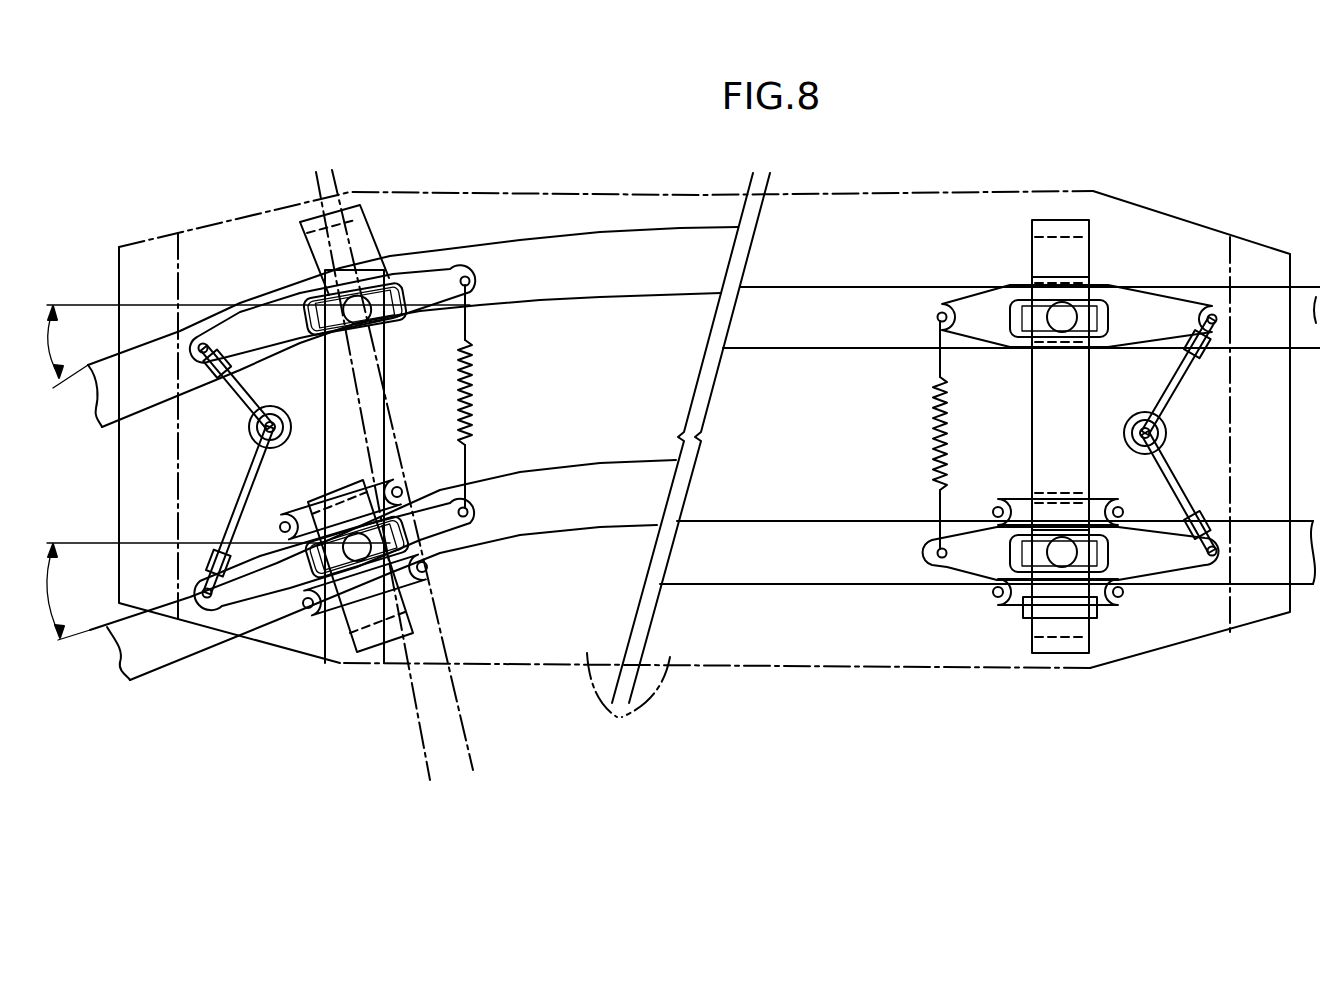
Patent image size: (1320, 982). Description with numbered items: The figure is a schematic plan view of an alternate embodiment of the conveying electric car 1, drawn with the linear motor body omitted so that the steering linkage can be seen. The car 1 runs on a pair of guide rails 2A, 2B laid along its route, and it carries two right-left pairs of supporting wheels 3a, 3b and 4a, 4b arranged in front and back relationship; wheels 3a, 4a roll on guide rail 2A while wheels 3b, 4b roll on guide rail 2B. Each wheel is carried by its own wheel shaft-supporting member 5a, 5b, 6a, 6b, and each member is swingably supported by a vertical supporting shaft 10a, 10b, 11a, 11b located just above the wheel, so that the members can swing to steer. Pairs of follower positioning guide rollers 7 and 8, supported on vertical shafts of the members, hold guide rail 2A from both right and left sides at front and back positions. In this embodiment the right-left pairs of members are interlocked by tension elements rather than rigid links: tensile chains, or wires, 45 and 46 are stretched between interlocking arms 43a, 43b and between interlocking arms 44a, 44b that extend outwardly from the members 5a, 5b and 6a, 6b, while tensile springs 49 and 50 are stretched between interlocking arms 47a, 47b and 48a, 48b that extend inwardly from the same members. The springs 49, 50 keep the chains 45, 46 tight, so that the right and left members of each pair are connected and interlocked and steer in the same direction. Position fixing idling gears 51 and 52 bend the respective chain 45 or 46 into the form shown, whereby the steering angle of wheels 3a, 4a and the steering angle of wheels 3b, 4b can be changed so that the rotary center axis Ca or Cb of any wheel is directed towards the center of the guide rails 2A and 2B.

The conveying electric car 1 is at (620, 724).
The guide rail 2A is at (698, 545).
The guide rail 2B is at (763, 307).
The supporting wheel 3a is at (1078, 610).
The supporting wheel 3b is at (1020, 310).
The supporting wheel 4a is at (437, 557).
The supporting wheel 4b is at (291, 302).
The wheel shaft-supporting member 5a is at (1033, 647).
The wheel shaft-supporting member 5b is at (1080, 230).
The wheel shaft-supporting member 6a is at (357, 650).
The wheel shaft-supporting member 6b is at (397, 277).
The follower positioning guide rollers 7 is at (977, 503).
The follower positioning guide rollers 8 is at (397, 480).
The vertical supporting shaft 10a is at (1060, 547).
The vertical supporting shaft 10b is at (1053, 323).
The vertical supporting shaft 11a is at (420, 597).
The vertical supporting shaft 11b is at (367, 330).
The interlocking arm 43a is at (1177, 563).
The interlocking arm 43b is at (1147, 303).
The interlocking arm 44a is at (263, 590).
The interlocking arm 44b is at (243, 330).
The tensile chain 45 is at (1163, 390).
The tensile chain 46 is at (250, 500).
The interlocking arm 47a is at (947, 560).
The interlocking arm 47b is at (967, 307).
The interlocking arm 48a is at (453, 527).
The interlocking arm 48b is at (430, 275).
The tensile spring 49 is at (920, 433).
The tensile spring 50 is at (473, 390).
The position fixing idling gear 51 is at (1160, 420).
The position fixing idling gear 52 is at (248, 428).
The rotary center axis Ca is at (373, 476).
The rotary center axis Cb is at (422, 472).